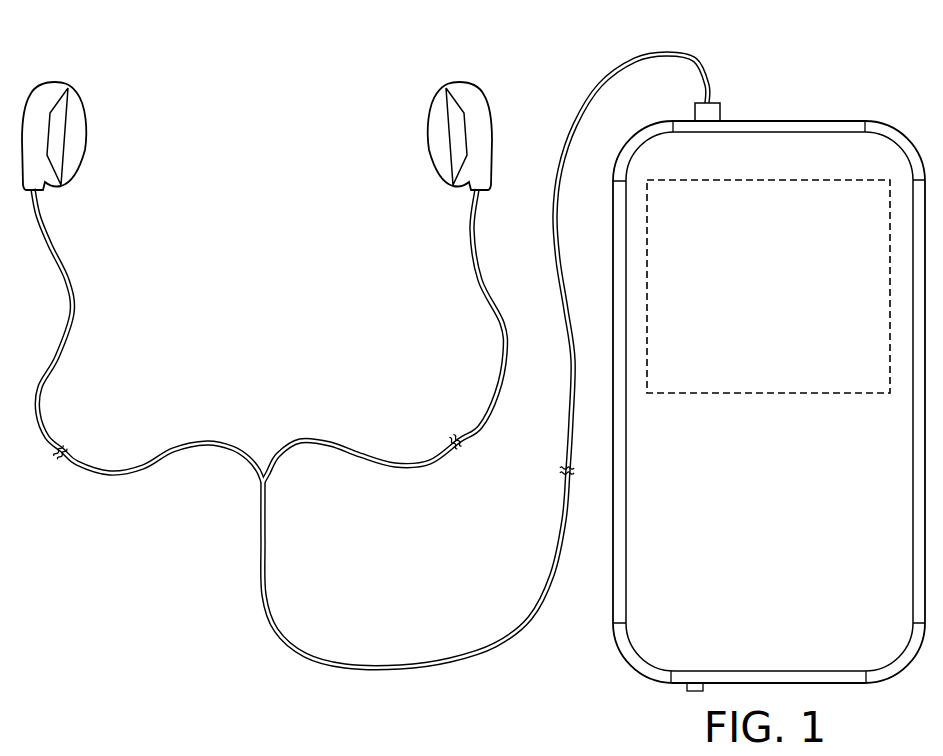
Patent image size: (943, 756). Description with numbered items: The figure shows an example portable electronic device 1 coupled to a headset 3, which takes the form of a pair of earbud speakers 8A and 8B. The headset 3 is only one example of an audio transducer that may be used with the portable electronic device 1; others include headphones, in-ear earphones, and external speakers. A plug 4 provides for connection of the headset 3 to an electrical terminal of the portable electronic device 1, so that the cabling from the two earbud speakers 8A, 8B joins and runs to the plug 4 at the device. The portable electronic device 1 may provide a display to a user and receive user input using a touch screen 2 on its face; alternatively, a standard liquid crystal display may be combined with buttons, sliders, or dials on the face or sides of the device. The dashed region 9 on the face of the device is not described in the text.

The portable electronic device 1 is at (846, 124).
The touch screen 2 is at (760, 611).
The headset 3 is at (210, 444).
The plug 4 is at (721, 113).
The earbud speaker 8A is at (455, 81).
The earbud speaker 8B is at (57, 81).
The display 9 is at (790, 394).